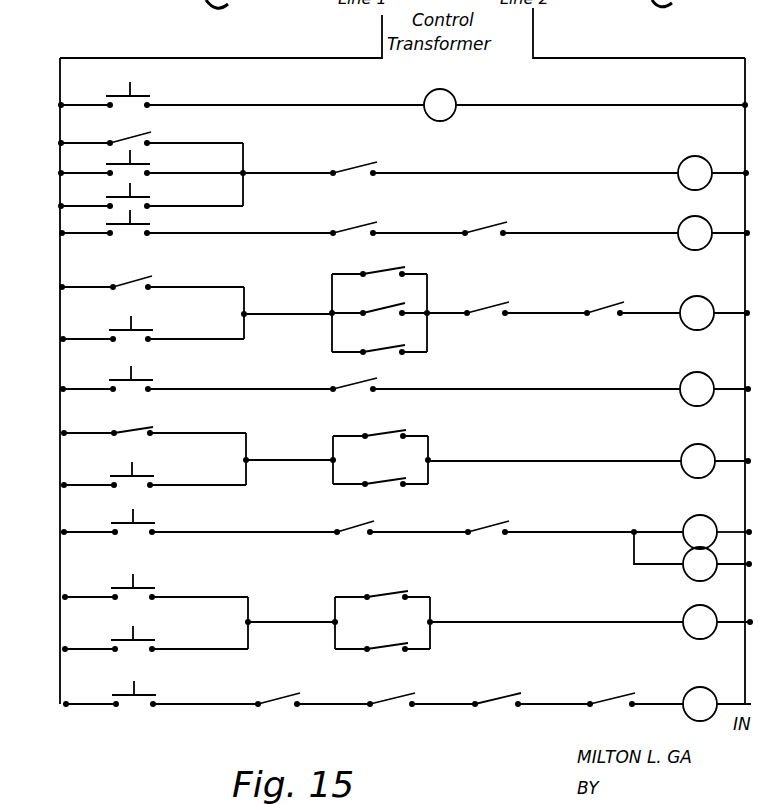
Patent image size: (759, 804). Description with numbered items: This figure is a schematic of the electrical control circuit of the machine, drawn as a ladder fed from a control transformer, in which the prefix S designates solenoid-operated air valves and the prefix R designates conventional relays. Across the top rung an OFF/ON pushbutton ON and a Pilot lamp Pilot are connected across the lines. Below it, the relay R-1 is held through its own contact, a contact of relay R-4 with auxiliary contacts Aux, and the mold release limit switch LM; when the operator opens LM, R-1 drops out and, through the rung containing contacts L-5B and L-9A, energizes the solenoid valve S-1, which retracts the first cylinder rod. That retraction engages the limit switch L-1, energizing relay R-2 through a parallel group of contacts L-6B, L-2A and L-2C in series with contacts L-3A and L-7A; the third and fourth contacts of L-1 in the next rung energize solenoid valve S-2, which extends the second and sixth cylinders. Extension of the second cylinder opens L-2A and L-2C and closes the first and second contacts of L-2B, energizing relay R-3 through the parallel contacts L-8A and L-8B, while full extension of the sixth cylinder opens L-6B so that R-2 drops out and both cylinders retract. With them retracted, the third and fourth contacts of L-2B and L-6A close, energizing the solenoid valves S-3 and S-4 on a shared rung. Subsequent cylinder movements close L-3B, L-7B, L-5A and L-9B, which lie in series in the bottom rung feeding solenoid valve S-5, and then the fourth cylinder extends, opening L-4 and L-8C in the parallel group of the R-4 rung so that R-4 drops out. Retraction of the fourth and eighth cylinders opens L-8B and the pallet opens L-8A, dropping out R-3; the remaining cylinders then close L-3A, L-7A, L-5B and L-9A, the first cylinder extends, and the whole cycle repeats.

The ON/OFF pushbutton switch ON is at (242, 95).
The pilot lamp Pilot is at (584, 100).
The limit switch contacts L-9A is at (369, 179).
The relay R-1 is at (403, 193).
The relay R-4 is at (405, 445).
The auxiliary contacts Aux is at (195, 196).
The limit switch LM is at (442, 162).
The limit switch contacts L-5B is at (397, 221).
The solenoid-operated air valve S-1 is at (712, 233).
The limit switch L-1 is at (371, 325).
The relay R-2 is at (405, 472).
The limit switch contacts L-6B is at (379, 302).
The limit switch contacts L-2A is at (398, 300).
The limit switch contacts L-2C is at (379, 341).
The limit switch contacts L-3A is at (525, 298).
The limit switch contacts L-7A is at (603, 298).
The solenoid-operated air valve S-2 is at (714, 389).
The limit switch contacts L-2B is at (266, 472).
The relay R-3 is at (406, 489).
The limit switch contacts L-8A is at (380, 448).
The limit switch contacts L-8B is at (380, 473).
The limit switch contacts L-6A is at (570, 518).
The solenoid-operated air valve S-3 is at (716, 532).
The solenoid-operated air valve S-4 is at (691, 556).
The limit switch contacts L-4 is at (382, 611).
The limit switch contacts L-8C is at (382, 638).
The limit switch contacts L-9B is at (308, 693).
The limit switch contacts L-5A is at (421, 690).
The limit switch contacts L-3B is at (531, 691).
The limit switch contacts L-7B is at (635, 691).
The solenoid-operated air valve S-5 is at (717, 704).